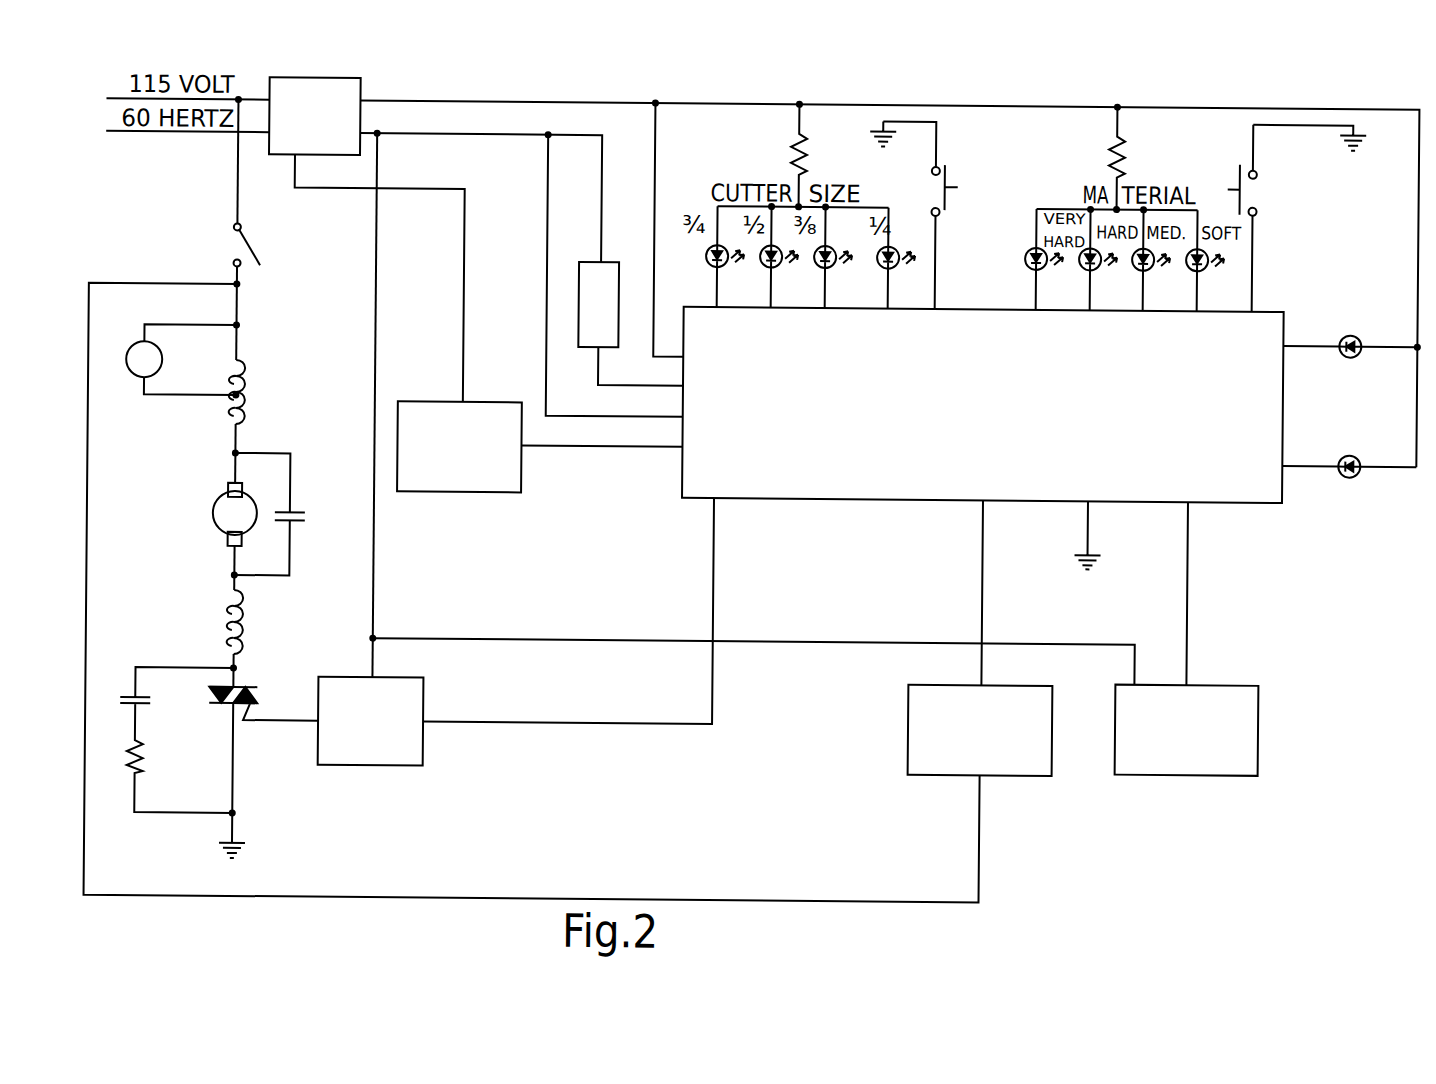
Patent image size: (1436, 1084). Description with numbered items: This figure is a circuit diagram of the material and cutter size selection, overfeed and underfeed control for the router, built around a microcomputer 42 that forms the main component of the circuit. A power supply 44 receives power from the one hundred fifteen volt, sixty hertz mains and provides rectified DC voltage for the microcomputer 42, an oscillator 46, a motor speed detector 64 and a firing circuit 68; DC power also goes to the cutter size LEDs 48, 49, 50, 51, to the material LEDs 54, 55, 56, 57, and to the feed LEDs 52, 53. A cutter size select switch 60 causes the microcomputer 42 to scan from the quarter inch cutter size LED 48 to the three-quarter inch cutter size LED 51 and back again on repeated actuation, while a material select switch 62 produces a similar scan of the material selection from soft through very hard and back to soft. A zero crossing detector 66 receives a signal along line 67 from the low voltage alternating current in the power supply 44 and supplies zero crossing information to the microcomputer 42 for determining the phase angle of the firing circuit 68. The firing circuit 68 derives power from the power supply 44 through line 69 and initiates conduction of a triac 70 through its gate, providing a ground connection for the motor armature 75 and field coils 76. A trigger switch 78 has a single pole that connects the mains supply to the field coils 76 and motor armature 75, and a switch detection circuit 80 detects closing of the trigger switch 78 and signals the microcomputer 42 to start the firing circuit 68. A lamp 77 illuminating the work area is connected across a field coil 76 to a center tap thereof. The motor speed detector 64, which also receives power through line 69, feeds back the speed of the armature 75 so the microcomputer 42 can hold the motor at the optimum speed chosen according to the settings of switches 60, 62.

The microcomputer 42 is at (822, 487).
The power supply 44 is at (357, 91).
The oscillator 46 is at (584, 264).
The ¼ inch cutter size LED 48 is at (876, 265).
The cutter size LED 49 is at (813, 265).
The cutter size LED 50 is at (760, 265).
The ¾ inch cutter size LED 51 is at (706, 265).
The LED 52 is at (1359, 467).
The LED 53 is at (1354, 351).
The material LED 54 is at (1188, 267).
The material LED 55 is at (1133, 267).
The material LED 56 is at (1079, 267).
The material LED 57 is at (1025, 267).
The cutter size select switch 60 is at (946, 176).
The material select switch 62 is at (1233, 181).
The motor speed detector 64 is at (1260, 708).
The zero crossing detector 66 is at (521, 480).
The line 67 is at (462, 305).
The firing circuit 68 is at (425, 697).
The line 69 is at (374, 597).
The triac 70 is at (252, 690).
The motor armature 75 is at (212, 514).
The field coils 76 is at (246, 392).
The lamp 77 is at (161, 364).
The trigger switch 78 is at (249, 252).
The switch detection circuit 80 is at (910, 717).